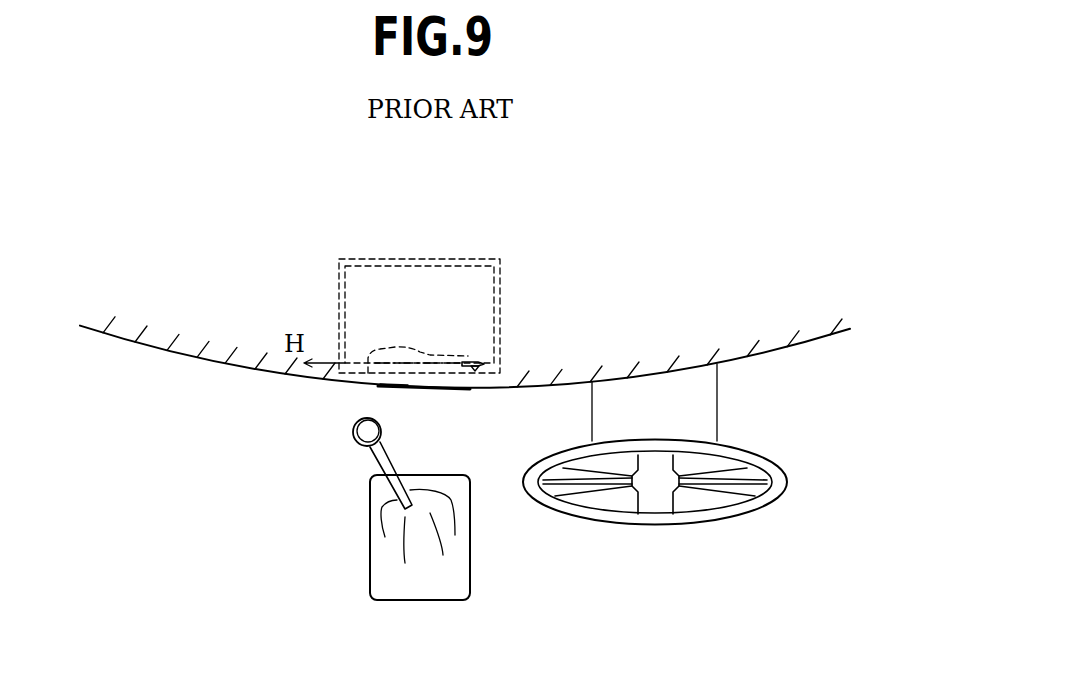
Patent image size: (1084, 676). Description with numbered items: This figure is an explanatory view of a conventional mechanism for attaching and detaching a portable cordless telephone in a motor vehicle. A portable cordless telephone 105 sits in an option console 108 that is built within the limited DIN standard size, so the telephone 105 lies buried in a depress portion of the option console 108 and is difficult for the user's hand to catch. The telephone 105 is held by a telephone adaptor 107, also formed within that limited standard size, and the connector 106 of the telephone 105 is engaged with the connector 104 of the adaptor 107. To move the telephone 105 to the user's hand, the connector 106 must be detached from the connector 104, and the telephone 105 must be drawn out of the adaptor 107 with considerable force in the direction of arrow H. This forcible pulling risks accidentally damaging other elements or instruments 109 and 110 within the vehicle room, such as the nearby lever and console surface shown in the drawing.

The connector 104 is at (478, 360).
The portable cordless telephone 105 is at (430, 355).
The connector 106 is at (476, 371).
The telephone adaptor 107 is at (437, 267).
The option console 108 is at (378, 258).
The instrument 109 is at (355, 441).
The instrument 110 is at (266, 368).